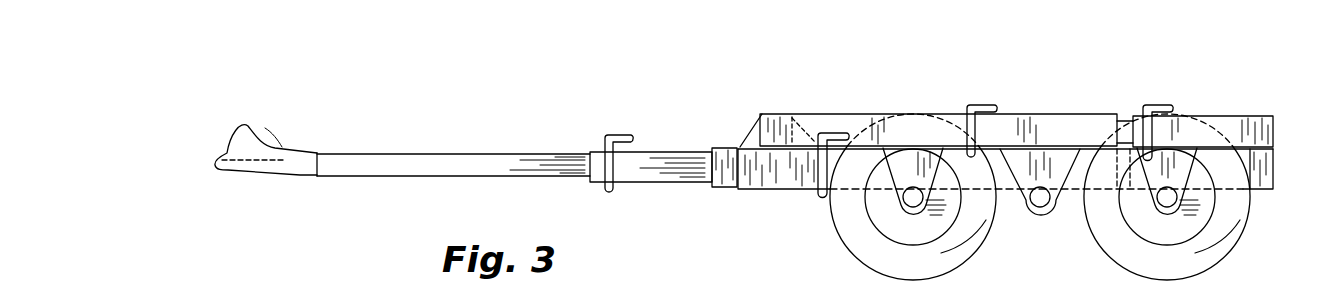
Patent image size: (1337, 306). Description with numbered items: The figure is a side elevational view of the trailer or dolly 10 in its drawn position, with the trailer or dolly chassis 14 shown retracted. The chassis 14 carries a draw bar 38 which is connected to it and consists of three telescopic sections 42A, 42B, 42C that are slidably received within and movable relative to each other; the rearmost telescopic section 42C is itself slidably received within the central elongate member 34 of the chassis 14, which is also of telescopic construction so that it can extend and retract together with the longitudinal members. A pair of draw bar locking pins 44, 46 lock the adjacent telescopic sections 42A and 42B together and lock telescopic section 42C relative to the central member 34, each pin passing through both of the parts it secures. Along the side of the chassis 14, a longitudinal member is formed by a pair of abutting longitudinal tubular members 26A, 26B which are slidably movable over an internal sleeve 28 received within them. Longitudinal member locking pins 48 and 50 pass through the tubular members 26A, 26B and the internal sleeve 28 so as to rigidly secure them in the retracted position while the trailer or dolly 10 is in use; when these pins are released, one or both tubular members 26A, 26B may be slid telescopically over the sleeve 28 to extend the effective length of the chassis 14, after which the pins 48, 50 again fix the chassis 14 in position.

The trailer or dolly 10 is at (765, 47).
The trailer or dolly chassis 14 is at (1015, 220).
The longitudinal tubular member 26A is at (997, 128).
The longitudinal tubular member 26B is at (1223, 125).
The internal sleeve 28 is at (1125, 120).
The central elongate member 34 is at (782, 186).
The draw bar 38 is at (532, 118).
The telescopic section 42A is at (430, 160).
The telescopic section 42B is at (663, 157).
The telescopic section 42C is at (722, 150).
The draw bar locking pin 44 is at (617, 135).
The draw bar locking pin 46 is at (840, 133).
The longitudinal member locking pin 48 is at (970, 103).
The longitudinal member locking pin 50 is at (1157, 103).